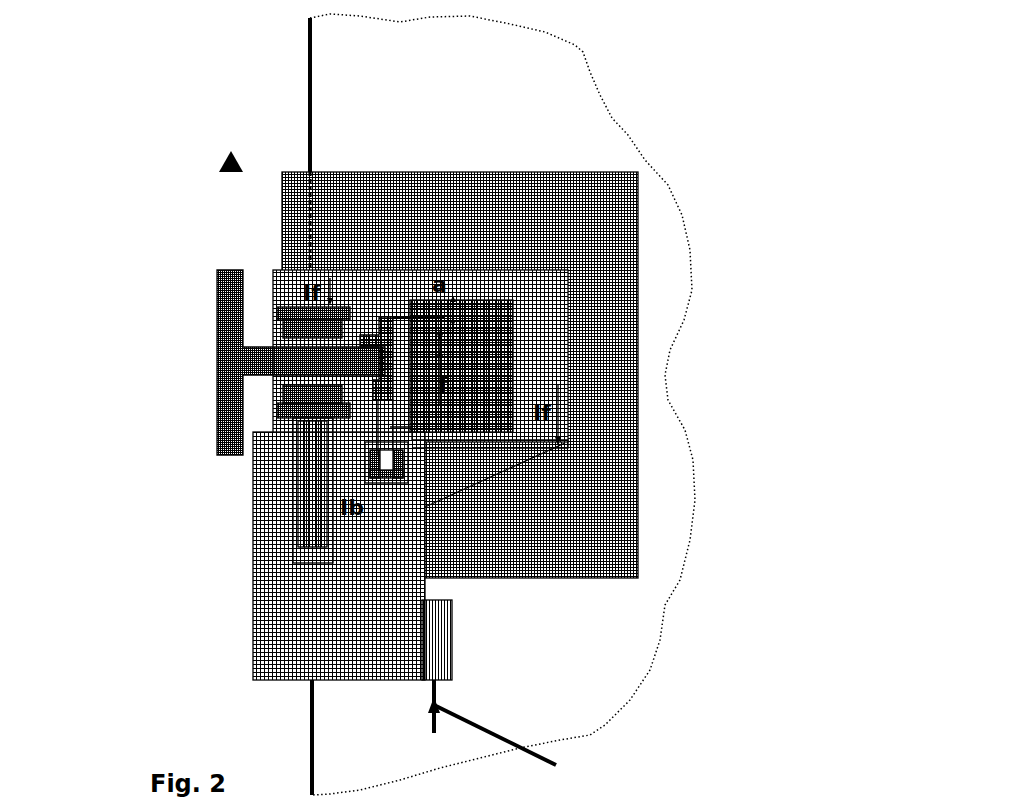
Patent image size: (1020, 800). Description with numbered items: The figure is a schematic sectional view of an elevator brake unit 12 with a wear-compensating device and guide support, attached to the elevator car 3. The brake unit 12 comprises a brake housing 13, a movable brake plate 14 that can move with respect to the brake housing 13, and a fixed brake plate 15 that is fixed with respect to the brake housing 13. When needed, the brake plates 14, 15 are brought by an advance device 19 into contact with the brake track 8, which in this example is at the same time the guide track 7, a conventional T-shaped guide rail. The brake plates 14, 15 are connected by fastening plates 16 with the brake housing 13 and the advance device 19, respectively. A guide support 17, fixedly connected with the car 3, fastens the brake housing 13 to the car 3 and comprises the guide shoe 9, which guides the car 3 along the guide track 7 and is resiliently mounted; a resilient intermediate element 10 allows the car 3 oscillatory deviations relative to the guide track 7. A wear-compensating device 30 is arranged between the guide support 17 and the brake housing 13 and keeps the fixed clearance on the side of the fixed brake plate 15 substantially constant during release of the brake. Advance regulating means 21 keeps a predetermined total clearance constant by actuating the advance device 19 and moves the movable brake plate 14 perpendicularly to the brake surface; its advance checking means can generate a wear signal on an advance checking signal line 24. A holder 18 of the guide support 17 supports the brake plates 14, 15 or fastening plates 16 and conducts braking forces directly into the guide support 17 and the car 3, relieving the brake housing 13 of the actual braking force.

The car 3 is at (534, 97).
The guide track 7 is at (230, 362).
The brake track 8 is at (265, 362).
The guide shoe 9 is at (392, 340).
The resilient intermediate element 10 is at (382, 313).
The brake unit 12 is at (222, 160).
The brake housing 13 is at (316, 617).
The movable brake plate 14 is at (308, 395).
The fixed brake plate 15 is at (295, 328).
The fastening plates 16 is at (313, 313).
The guide support 17 is at (603, 298).
The holder 18 is at (315, 415).
The advance device 19 is at (310, 480).
The advance regulating means 21 is at (435, 637).
The advance checking signal line 24 is at (511, 732).
The wear-compensating device 30 is at (446, 475).